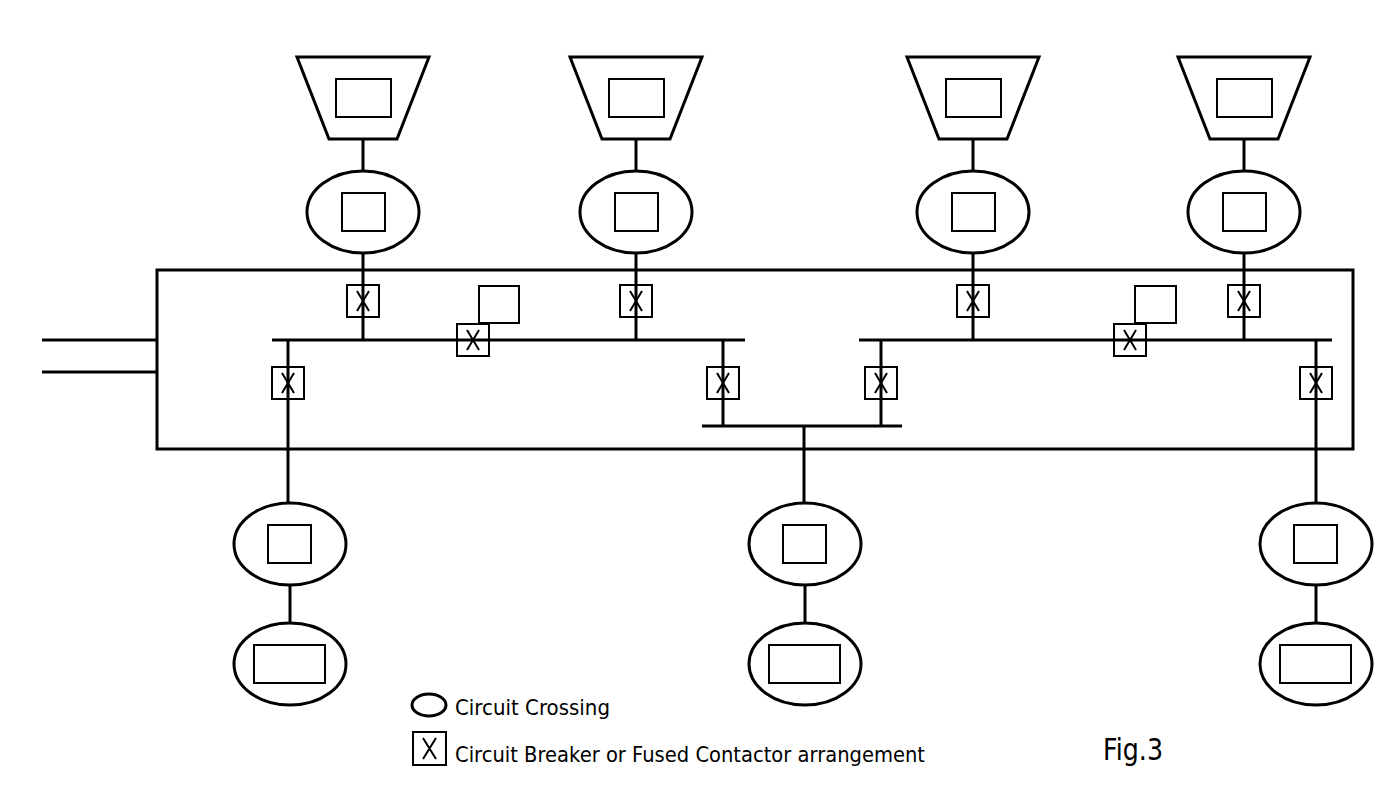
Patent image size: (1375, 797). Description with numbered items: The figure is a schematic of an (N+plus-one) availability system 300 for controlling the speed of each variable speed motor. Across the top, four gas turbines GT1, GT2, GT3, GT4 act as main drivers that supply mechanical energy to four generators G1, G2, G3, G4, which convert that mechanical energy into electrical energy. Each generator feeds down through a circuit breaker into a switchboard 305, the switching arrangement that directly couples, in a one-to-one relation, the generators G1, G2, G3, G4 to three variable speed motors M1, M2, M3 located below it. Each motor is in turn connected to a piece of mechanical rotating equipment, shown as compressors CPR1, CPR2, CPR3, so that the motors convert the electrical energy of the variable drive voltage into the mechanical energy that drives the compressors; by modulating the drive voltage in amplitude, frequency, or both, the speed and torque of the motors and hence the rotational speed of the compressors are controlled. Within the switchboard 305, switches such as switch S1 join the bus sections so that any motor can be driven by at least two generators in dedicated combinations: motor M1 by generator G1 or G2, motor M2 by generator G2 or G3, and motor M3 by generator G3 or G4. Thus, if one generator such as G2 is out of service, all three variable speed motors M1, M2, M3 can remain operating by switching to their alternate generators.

The (N+1) availability system 300 is at (707, 381).
The switchboard 305 is at (697, 386).
The gas turbine GT1 is at (363, 98).
The gas turbine GT2 is at (636, 98).
The gas turbine GT3 is at (973, 98).
The gas turbine GT4 is at (1244, 98).
The generator G1 is at (363, 212).
The generator G2 is at (636, 212).
The generator G3 is at (973, 212).
The generator G4 is at (1244, 212).
The switch S1 is at (816, 321).
The variable speed motor M1 is at (290, 544).
The variable speed motor M2 is at (805, 544).
The variable speed motor M3 is at (1316, 544).
The compressor CPR1 is at (290, 664).
The compressor CPR2 is at (805, 664).
The compressor CPR3 is at (1316, 664).